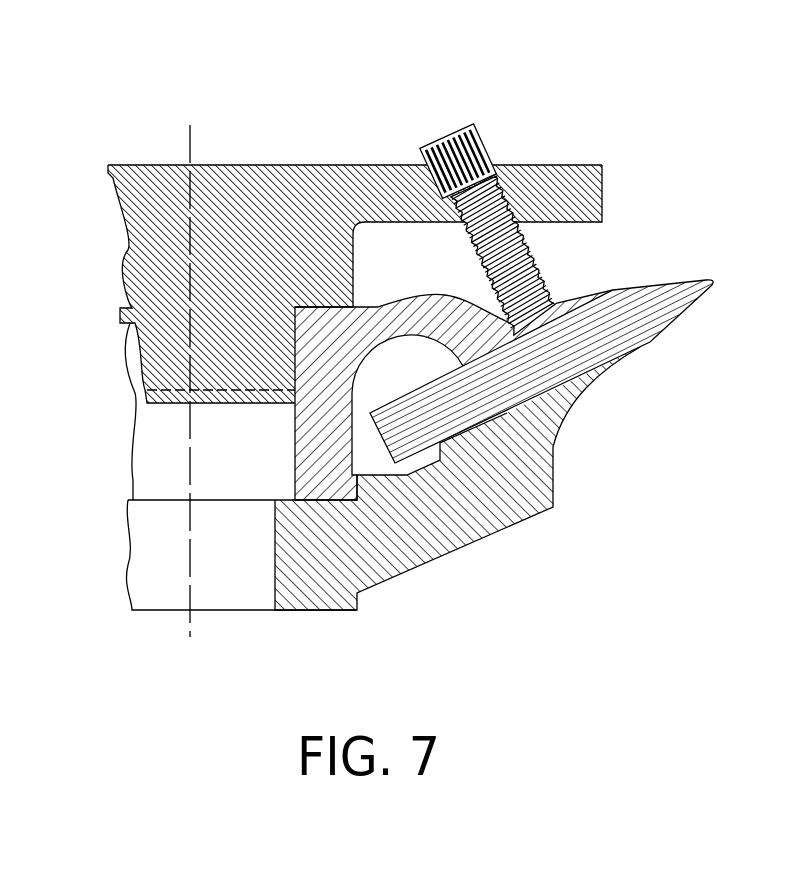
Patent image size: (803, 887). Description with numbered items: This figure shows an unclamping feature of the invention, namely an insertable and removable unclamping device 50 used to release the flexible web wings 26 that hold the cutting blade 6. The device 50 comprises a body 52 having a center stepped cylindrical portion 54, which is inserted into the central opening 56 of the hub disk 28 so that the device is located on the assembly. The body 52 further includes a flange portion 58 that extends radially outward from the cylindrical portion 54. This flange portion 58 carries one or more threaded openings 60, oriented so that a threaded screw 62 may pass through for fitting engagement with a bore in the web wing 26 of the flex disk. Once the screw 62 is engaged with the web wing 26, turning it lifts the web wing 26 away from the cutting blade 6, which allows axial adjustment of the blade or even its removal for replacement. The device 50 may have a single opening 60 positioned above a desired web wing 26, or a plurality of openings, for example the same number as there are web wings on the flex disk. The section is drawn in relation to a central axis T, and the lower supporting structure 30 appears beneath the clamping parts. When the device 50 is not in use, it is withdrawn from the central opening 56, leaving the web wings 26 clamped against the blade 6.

The cutting blade 6 is at (670, 310).
The flexible web wing 26 is at (454, 368).
The hub disk 28 is at (340, 385).
The base support 30 is at (530, 487).
The unclamping device 50 is at (333, 210).
The body 52 is at (345, 178).
The center stepped cylindrical portion 54 is at (150, 247).
The central opening 56 is at (168, 457).
The flange portion 58 is at (580, 177).
The threaded opening 60 is at (546, 192).
The threaded screw 62 is at (498, 173).
The axis T is at (190, 132).